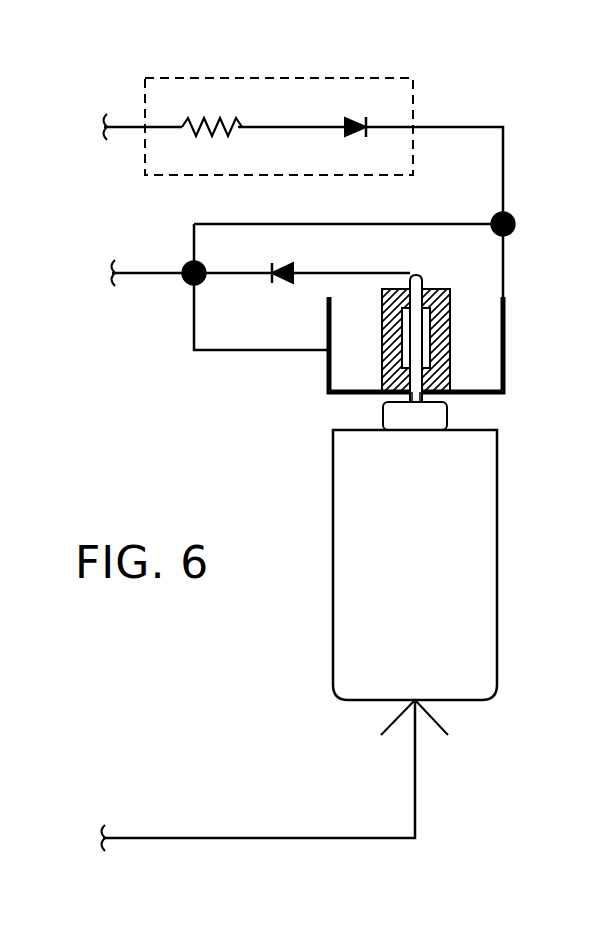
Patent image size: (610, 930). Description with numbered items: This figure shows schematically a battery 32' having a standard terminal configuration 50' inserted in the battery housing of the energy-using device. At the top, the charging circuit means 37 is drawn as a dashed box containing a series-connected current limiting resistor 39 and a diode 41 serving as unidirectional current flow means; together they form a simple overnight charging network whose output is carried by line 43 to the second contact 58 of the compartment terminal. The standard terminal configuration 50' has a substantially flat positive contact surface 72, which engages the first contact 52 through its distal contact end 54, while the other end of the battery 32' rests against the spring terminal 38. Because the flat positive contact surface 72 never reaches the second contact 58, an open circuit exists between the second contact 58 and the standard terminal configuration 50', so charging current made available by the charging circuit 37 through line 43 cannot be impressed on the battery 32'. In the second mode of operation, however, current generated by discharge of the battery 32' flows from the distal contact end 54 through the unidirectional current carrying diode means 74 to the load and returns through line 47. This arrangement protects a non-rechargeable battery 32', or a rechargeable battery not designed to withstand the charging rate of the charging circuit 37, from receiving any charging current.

The charging circuit means 37 is at (282, 78).
The current limiting resistor 39 is at (230, 127).
The diode 41 is at (342, 132).
The line 43 is at (504, 167).
The unidirectional current carrying diode means 74 is at (296, 268).
The first contact 52 is at (417, 286).
The second contact 58 is at (505, 328).
The distal contact end 54 is at (448, 376).
The standard terminal configuration 50' is at (473, 434).
The flat positive contact surface 72 is at (407, 404).
The battery 32' is at (415, 565).
The spring terminal 38 is at (433, 718).
The line 47 is at (250, 838).